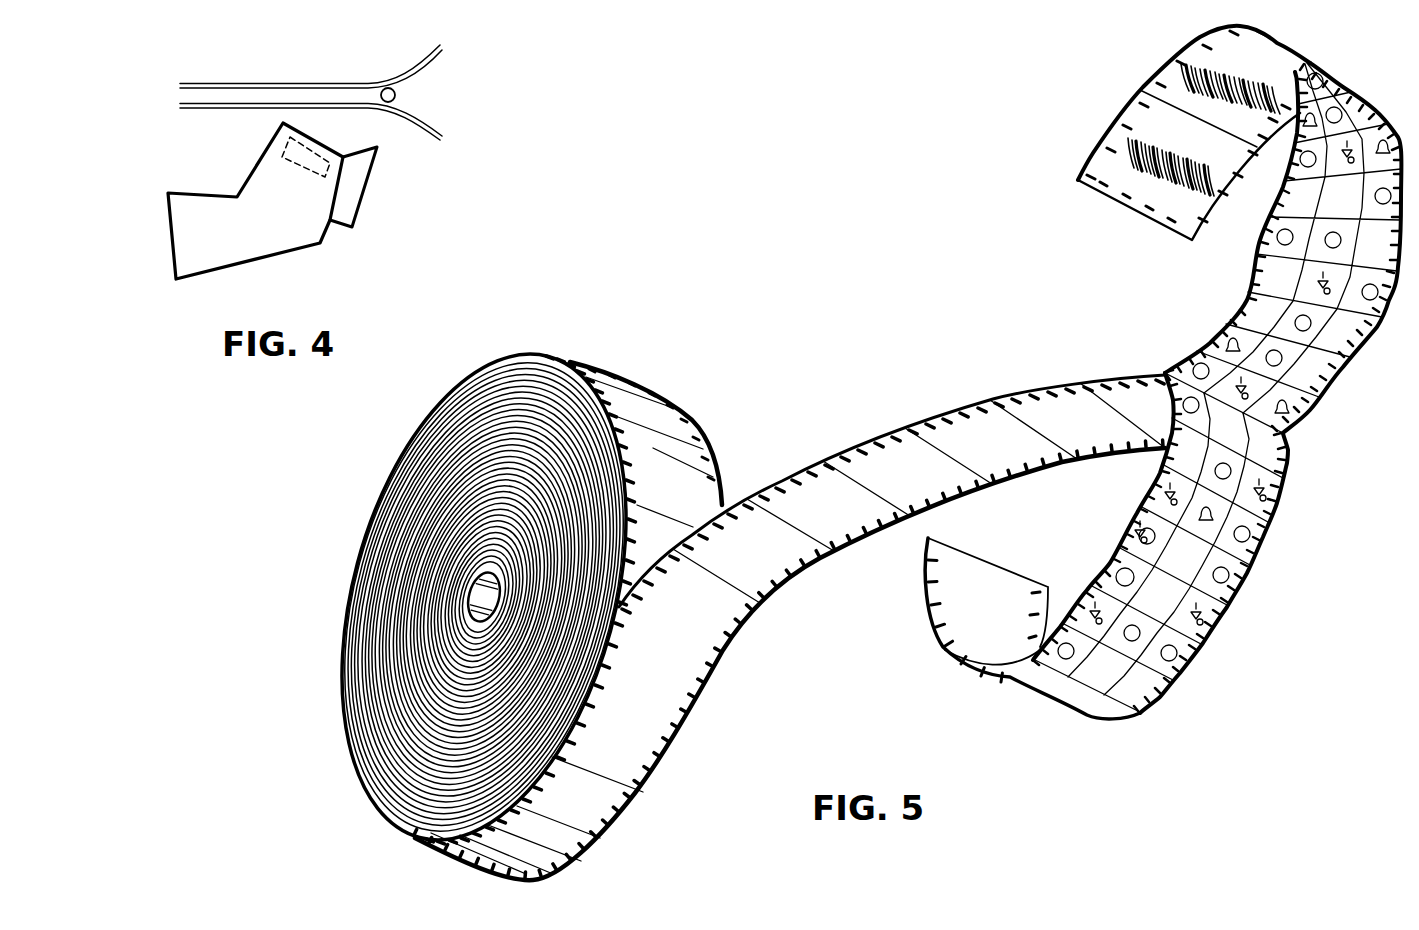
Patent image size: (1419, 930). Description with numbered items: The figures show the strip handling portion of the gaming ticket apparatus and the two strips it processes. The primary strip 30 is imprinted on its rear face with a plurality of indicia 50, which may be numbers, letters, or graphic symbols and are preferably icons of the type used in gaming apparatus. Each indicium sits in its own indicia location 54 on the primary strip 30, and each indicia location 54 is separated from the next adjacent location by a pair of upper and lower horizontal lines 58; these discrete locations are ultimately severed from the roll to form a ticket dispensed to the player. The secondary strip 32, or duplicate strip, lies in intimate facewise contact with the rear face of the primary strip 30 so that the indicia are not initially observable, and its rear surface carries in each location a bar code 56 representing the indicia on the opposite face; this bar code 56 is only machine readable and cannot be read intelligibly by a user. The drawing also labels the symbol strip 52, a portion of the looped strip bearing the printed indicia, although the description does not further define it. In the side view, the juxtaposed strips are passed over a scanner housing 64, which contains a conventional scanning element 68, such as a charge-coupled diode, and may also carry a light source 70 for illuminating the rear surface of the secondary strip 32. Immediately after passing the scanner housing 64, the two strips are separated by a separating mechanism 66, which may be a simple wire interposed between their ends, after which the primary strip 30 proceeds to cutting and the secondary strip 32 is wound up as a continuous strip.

In FIG. 4, the primary strip 30 is at (420, 68).
In FIG. 5, the primary strip 30 is at (960, 571).
In FIG. 4, the secondary strip 32 is at (440, 128).
In FIG. 5, the secondary strip 32 is at (1113, 187).
In FIG. 4, the scanner housing 64 is at (235, 266).
In FIG. 4, the separating mechanism 66 is at (402, 93).
In FIG. 4, the scanning element 68 is at (278, 124).
In FIG. 4, the light source 70 is at (364, 196).
In FIG. 5, the indicia 50 is at (1113, 597).
In FIG. 5, the symbol strip 52 is at (1244, 300).
In FIG. 5, the indicia location 54 is at (1127, 528).
In FIG. 5, the bar code 56 is at (1350, 372).
In FIG. 5, the upper and lower horizontal lines 58 is at (1287, 503).